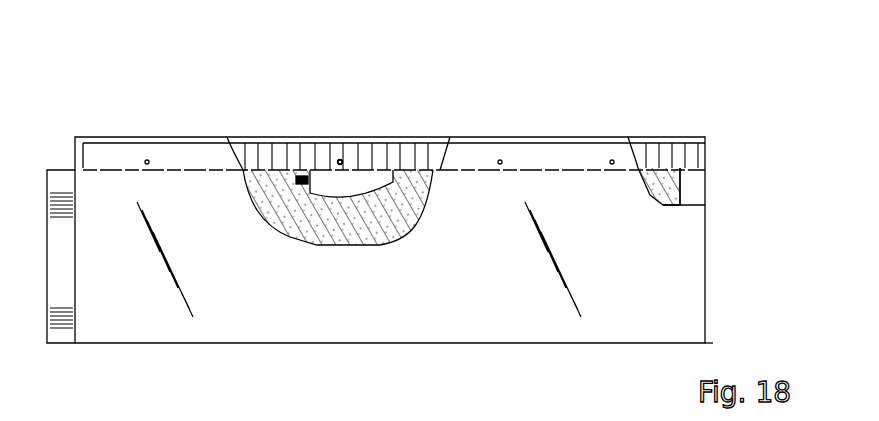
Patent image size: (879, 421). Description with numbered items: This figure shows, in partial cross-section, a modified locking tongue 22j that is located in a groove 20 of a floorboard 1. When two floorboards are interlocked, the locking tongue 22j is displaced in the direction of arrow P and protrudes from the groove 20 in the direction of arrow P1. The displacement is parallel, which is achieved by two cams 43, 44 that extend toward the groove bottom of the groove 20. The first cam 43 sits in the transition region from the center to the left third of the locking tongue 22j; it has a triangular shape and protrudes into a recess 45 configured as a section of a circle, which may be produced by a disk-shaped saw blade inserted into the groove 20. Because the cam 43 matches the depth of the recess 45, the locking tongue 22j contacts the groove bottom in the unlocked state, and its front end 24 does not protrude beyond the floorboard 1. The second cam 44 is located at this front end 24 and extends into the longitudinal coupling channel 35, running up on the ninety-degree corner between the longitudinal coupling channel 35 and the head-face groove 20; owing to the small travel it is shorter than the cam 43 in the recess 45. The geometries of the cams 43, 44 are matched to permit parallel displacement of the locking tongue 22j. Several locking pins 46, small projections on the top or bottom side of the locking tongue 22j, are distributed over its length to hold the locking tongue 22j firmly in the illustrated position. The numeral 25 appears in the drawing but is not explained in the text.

The floorboard 1 is at (514, 137).
The groove 20 is at (78, 136).
The locking tongue 22j is at (644, 152).
The front end 24 is at (697, 158).
The recess 25 is at (284, 183).
The longitudinal coupling channel 35 is at (693, 197).
The first cam 43 is at (299, 176).
The second cam 44 is at (700, 174).
The recess 45 is at (378, 187).
The locking pins 46 is at (341, 158).
The arrow P is at (182, 112).
The arrow P1 is at (188, 115).